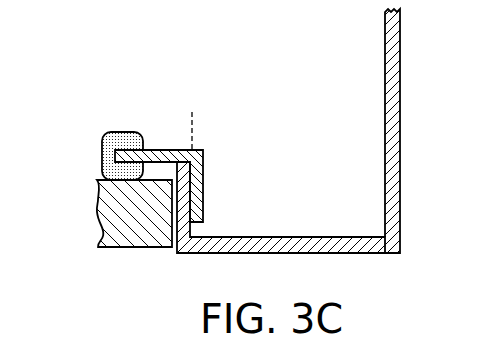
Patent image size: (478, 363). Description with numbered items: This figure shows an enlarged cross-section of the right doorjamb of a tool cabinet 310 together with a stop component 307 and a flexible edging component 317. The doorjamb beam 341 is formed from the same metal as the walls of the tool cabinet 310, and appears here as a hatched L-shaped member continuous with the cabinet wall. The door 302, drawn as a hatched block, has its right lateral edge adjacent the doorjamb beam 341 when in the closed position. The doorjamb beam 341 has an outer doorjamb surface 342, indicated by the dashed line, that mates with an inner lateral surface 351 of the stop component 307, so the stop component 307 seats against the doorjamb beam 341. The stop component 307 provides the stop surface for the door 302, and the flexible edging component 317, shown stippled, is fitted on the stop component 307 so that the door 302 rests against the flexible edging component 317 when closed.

The door 302 is at (117, 225).
The stop component 307 is at (204, 161).
The tool cabinet 310 is at (385, 97).
The flexible edging component 317 is at (104, 137).
The doorjamb beam 341 is at (184, 253).
The outer doorjamb surface 342 is at (198, 104).
The inner lateral surface 351 is at (197, 234).